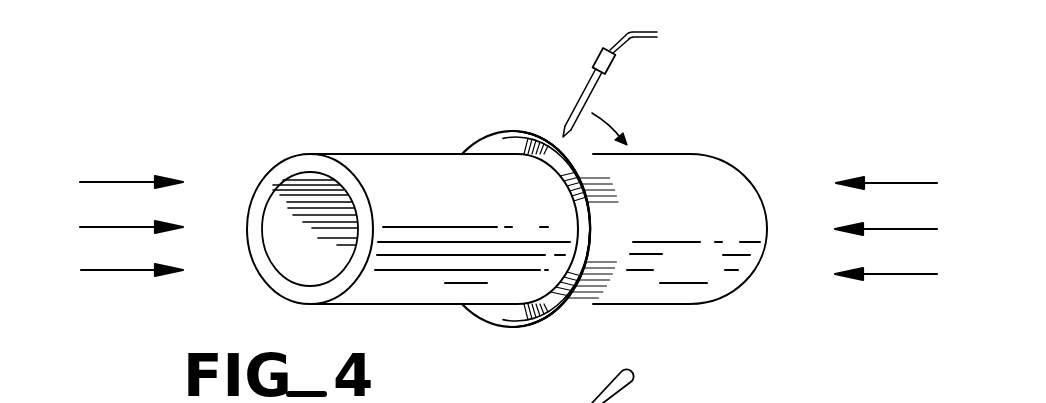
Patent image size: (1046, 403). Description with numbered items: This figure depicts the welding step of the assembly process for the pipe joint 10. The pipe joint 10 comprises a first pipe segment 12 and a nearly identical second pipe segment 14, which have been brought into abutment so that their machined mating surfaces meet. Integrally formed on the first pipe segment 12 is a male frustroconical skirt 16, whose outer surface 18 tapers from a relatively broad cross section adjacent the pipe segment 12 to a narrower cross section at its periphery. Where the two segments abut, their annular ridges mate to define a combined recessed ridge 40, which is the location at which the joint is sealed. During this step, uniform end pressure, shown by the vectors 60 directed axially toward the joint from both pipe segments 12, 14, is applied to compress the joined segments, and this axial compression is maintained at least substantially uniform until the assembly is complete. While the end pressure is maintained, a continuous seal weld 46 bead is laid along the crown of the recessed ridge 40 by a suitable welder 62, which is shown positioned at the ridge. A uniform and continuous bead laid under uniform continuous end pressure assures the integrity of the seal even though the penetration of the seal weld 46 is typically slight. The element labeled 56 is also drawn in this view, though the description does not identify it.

The pipe joint 10 is at (375, 103).
The first pipe segment 12 is at (350, 153).
The second pipe segment 14 is at (693, 155).
The male frustroconical skirt 16 is at (490, 147).
The outer surface 18 is at (507, 133).
The combined recessed ridge 40 is at (603, 240).
The seal weld 46 is at (565, 193).
The probe tip 56 is at (567, 386).
The end pressure vectors 60 is at (118, 225).
The welder 62 is at (585, 93).